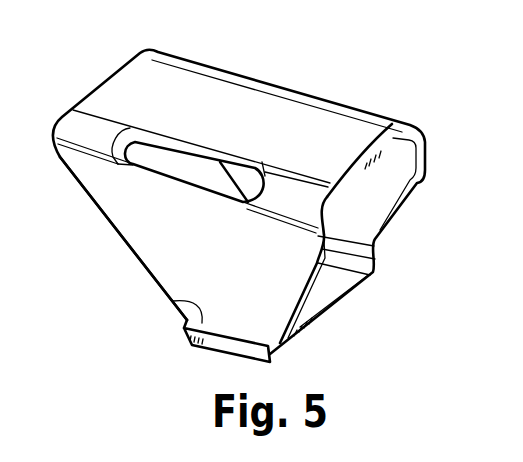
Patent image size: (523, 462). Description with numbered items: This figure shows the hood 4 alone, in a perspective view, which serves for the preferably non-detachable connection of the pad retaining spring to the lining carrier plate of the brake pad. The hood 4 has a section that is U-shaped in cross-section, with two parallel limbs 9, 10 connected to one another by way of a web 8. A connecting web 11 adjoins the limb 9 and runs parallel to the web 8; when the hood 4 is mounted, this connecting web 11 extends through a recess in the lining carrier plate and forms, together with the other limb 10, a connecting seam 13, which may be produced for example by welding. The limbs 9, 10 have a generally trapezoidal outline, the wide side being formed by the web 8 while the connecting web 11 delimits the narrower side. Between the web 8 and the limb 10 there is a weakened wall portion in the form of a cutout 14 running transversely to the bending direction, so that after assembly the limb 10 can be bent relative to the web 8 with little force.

The hood 4 is at (357, 98).
The web 8 is at (193, 83).
The limb 9 is at (393, 173).
The limb 10 is at (163, 258).
The connecting web 11 is at (343, 296).
The connecting seam 13 is at (177, 302).
The cutout 14 is at (157, 153).